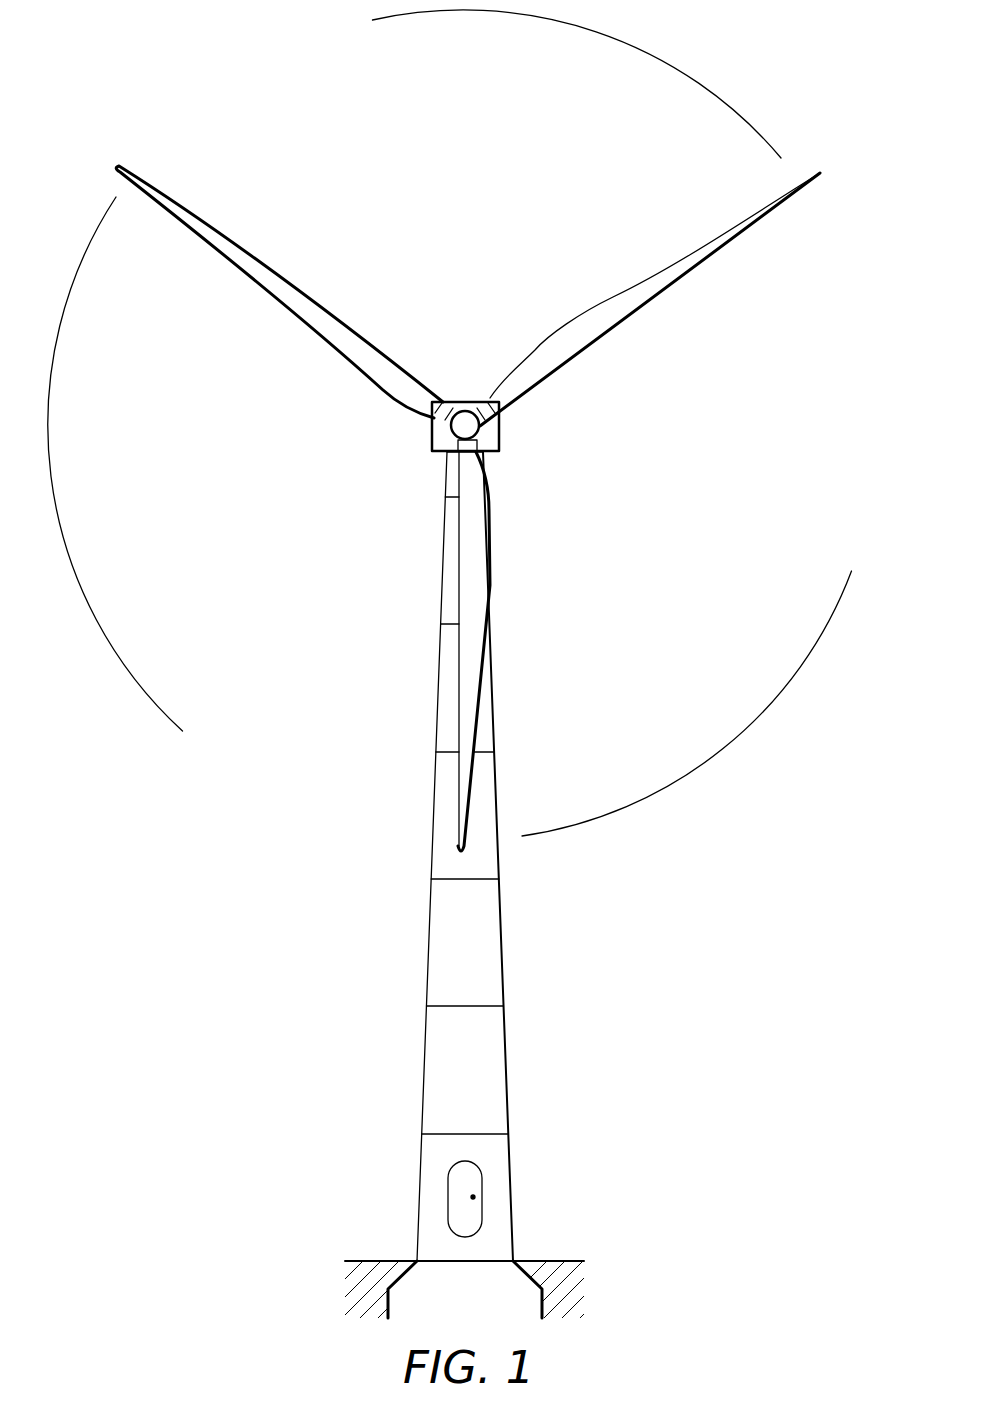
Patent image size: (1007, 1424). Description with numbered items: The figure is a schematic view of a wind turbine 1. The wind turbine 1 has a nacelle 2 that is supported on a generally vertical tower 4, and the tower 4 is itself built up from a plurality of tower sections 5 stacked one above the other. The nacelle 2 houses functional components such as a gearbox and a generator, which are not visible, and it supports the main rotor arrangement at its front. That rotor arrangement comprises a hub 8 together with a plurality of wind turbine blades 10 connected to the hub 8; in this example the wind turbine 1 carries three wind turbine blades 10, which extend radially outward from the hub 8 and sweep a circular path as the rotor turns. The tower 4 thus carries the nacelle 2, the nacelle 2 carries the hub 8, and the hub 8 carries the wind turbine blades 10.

The wind turbine 1 is at (260, 110).
The nacelle 2 is at (499, 440).
The hub 8 is at (465, 423).
The wind turbine blade 10 is at (693, 262).
The tower 4 is at (503, 940).
The tower section 5 is at (495, 1067).